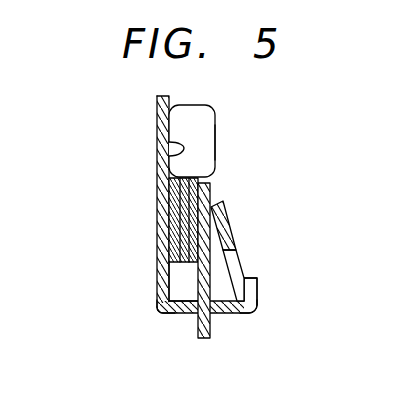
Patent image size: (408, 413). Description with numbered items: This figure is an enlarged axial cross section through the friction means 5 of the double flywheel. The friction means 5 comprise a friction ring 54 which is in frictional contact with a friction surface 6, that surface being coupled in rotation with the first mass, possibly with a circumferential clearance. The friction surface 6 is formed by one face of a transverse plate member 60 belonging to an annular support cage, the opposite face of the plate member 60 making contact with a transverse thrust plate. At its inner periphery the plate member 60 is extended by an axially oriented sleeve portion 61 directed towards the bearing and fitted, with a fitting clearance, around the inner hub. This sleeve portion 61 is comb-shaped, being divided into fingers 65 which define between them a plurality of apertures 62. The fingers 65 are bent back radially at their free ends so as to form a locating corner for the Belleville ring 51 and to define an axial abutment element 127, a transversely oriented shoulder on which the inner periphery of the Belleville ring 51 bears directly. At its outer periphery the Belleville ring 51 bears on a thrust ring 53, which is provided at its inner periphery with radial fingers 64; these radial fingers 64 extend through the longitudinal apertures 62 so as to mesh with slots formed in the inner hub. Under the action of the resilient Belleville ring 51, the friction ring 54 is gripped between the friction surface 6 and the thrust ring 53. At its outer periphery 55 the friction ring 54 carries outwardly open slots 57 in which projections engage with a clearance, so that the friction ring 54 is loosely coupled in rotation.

The friction means 5 is at (143, 327).
The friction surface 6 is at (157, 155).
The Belleville ring 51 is at (232, 223).
The thrust ring 53 is at (203, 187).
The friction ring 54 is at (170, 273).
The outer periphery 55 is at (215, 153).
The slots 57 is at (200, 123).
The plate member 60 is at (157, 115).
The sleeve portion 61 is at (174, 313).
The apertures 62 is at (235, 313).
The radial fingers 64 is at (209, 340).
The fingers 65 is at (240, 289).
The axial abutment element 127 is at (238, 312).